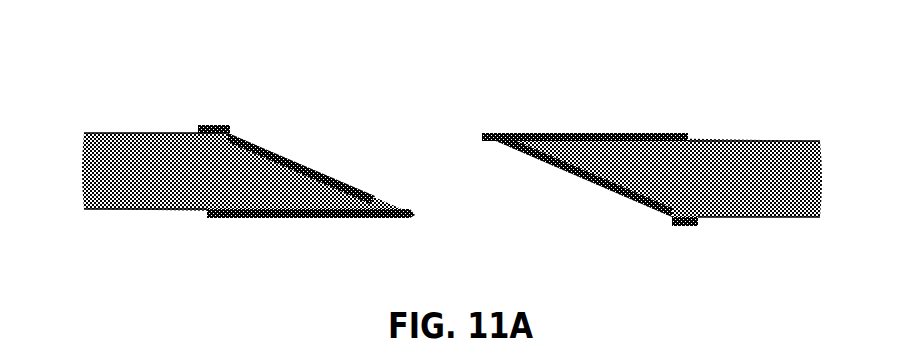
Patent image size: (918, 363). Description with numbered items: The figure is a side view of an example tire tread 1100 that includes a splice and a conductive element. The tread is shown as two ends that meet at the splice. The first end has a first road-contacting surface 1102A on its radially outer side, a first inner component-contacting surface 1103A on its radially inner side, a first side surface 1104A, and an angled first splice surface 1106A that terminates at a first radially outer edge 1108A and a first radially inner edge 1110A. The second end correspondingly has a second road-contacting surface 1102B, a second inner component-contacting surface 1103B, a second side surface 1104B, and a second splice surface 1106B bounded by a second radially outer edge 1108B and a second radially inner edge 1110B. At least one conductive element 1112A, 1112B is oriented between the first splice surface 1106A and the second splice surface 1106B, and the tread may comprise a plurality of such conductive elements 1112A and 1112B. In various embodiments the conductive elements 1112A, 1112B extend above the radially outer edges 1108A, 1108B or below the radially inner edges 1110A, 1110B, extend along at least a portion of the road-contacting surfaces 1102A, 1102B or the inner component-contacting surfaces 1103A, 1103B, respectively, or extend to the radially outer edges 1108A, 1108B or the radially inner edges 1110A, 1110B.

The tire tread 1100 is at (545, 92).
The first road-contacting surface 1102A is at (150, 132).
The second road-contacting surface 1102B is at (702, 140).
The first inner component-contacting surface 1103A is at (158, 210).
The second inner component-contacting surface 1103B is at (778, 218).
The first side surface 1104A is at (98, 148).
The second side surface 1104B is at (797, 162).
The first splice surface 1106A is at (297, 167).
The second splice surface 1106B is at (620, 193).
The first radially outer edge 1108A is at (228, 134).
The second radially outer edge 1108B is at (482, 135).
The first radially inner edge 1110A is at (380, 208).
The second radially inner edge 1110B is at (673, 225).
The conductive element 1112A is at (363, 190).
The conductive element 1112B is at (617, 197).